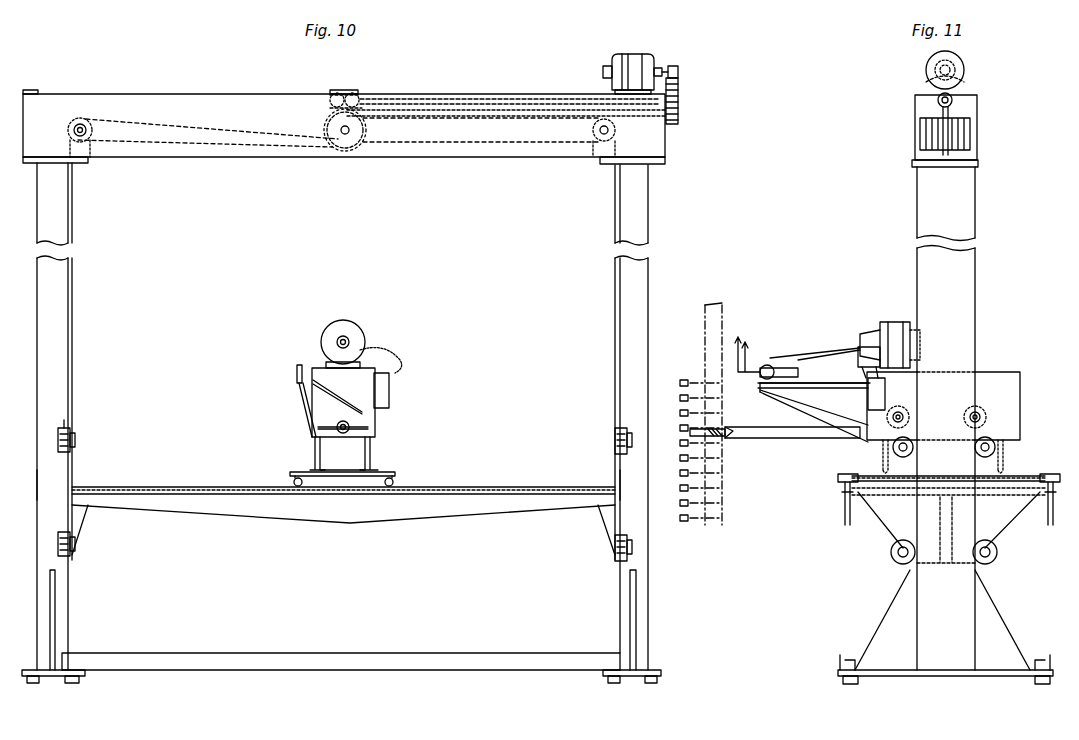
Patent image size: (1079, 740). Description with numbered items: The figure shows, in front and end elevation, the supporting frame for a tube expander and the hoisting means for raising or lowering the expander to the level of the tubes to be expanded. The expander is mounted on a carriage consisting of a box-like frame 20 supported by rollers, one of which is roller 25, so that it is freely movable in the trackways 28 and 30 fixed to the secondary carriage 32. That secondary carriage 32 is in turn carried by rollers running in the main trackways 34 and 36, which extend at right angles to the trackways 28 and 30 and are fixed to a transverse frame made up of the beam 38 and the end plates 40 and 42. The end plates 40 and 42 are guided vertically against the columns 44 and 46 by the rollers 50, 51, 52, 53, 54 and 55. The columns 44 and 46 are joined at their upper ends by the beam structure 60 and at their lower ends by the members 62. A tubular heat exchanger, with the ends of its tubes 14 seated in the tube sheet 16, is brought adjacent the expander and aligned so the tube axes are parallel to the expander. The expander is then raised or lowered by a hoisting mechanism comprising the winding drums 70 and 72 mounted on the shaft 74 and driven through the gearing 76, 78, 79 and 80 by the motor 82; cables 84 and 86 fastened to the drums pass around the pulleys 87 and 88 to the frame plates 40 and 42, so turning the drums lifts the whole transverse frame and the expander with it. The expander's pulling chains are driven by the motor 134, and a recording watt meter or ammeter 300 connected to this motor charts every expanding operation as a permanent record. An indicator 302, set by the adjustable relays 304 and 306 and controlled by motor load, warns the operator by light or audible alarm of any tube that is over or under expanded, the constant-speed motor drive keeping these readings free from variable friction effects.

In FIG. 11, the tubes 14 is at (681, 380).
In FIG. 11, the tube sheet 16 is at (722, 305).
In FIG. 10, the box-like frame 20 is at (376, 422).
In FIG. 11, the box-like frame 20 is at (1003, 372).
In FIG. 10, the roller 25 is at (365, 470).
In FIG. 10, the trackway 28 is at (312, 470).
In FIG. 10, the trackway 30 is at (372, 470).
In FIG. 10, the secondary carriage 32 is at (396, 474).
In FIG. 11, the main trackway 34 is at (843, 500).
In FIG. 11, the main trackway 36 is at (1046, 500).
In FIG. 10, the beam 38 is at (392, 512).
In FIG. 10, the end plate 40 is at (72, 475).
In FIG. 10, the end plate 42 is at (615, 467).
In FIG. 11, the end plate 42 is at (870, 536).
In FIG. 10, the column 44 is at (53, 313).
In FIG. 10, the column 46 is at (625, 293).
In FIG. 11, the roller 50 is at (892, 447).
In FIG. 11, the roller 51 is at (997, 447).
In FIG. 11, the roller 52 is at (895, 562).
In FIG. 11, the roller 53 is at (995, 562).
In FIG. 10, the roller 54 is at (70, 418).
In FIG. 10, the roller 55 is at (63, 557).
In FIG. 10, the beam structure 60 is at (196, 94).
In FIG. 10, the members 62 is at (335, 655).
In FIG. 11, the members 62 is at (838, 665).
In FIG. 11, the winding drum 70 is at (918, 150).
In FIG. 11, the winding drum 72 is at (965, 150).
In FIG. 10, the shaft 74 is at (350, 134).
In FIG. 10, the gearing 76 is at (337, 146).
In FIG. 10, the gearing 78 is at (348, 90).
In FIG. 10, the gearing 79 is at (677, 120).
In FIG. 10, the gearing 80 is at (677, 67).
In FIG. 10, the motor 82 is at (612, 58).
In FIG. 10, the cable 84 is at (455, 122).
In FIG. 10, the cable 86 is at (208, 134).
In FIG. 10, the pulley 87 is at (87, 142).
In FIG. 10, the pulley 88 is at (597, 142).
In FIG. 10, the motor 134 is at (360, 332).
In FIG. 11, the motor 134 is at (890, 324).
In FIG. 10, the recording watt meter or ammeter 300 is at (390, 386).
In FIG. 11, the recording watt meter or ammeter 300 is at (872, 392).
In FIG. 10, the indicator 302 is at (297, 368).
In FIG. 11, the indicator 302 is at (772, 383).
In FIG. 11, the adjustable relay 304 is at (766, 364).
In FIG. 11, the adjustable relay 306 is at (762, 390).